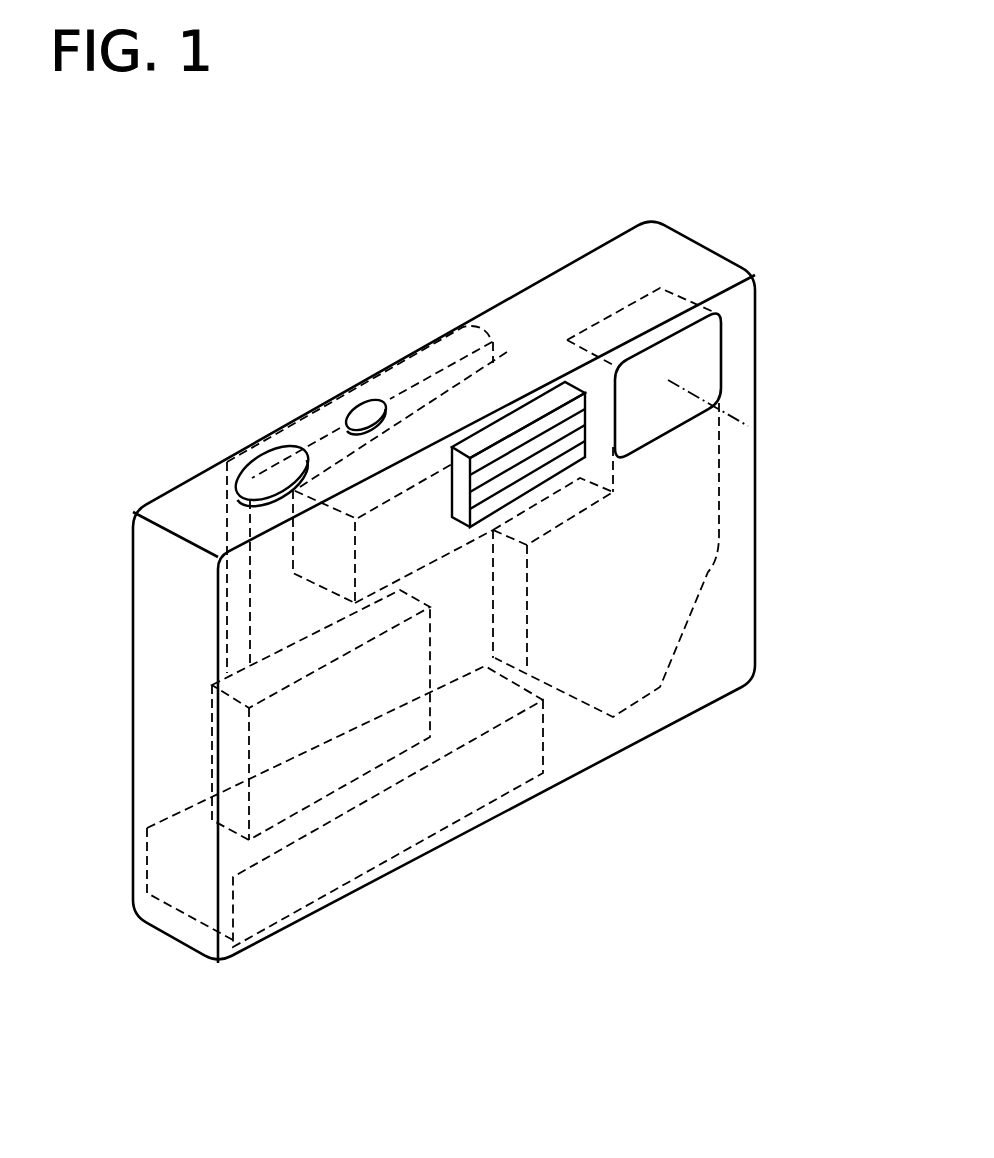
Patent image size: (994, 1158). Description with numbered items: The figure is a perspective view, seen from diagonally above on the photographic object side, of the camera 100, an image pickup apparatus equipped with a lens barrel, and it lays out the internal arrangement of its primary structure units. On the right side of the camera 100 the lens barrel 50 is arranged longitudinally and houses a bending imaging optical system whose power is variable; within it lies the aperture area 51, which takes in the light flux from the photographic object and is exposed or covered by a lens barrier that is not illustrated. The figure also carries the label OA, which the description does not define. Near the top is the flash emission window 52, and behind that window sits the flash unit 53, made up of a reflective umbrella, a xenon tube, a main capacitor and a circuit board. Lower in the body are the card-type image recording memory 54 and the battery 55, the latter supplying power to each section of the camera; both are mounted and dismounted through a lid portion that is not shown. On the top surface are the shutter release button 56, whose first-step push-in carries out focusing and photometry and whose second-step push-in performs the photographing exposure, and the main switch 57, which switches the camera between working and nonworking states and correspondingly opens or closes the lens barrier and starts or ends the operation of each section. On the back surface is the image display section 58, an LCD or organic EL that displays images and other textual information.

The camera 100 is at (513, 200).
The lens barrel 50 is at (703, 500).
The aperture area 51 is at (693, 372).
The optical axis OA is at (753, 428).
The flash emission window 52 is at (537, 430).
The flash unit 53 is at (513, 370).
The image recording memory 54 is at (330, 770).
The battery 55 is at (430, 808).
The shutter release button 56 is at (270, 472).
The main switch 57 is at (365, 412).
The image display section 58 is at (417, 368).